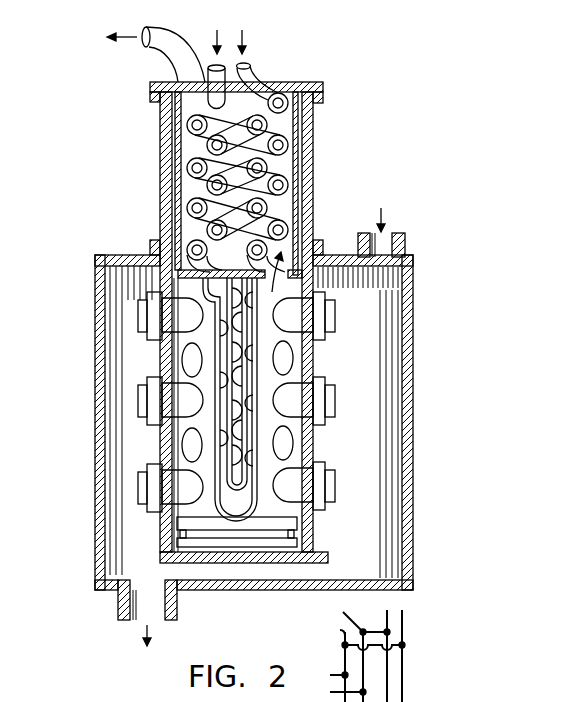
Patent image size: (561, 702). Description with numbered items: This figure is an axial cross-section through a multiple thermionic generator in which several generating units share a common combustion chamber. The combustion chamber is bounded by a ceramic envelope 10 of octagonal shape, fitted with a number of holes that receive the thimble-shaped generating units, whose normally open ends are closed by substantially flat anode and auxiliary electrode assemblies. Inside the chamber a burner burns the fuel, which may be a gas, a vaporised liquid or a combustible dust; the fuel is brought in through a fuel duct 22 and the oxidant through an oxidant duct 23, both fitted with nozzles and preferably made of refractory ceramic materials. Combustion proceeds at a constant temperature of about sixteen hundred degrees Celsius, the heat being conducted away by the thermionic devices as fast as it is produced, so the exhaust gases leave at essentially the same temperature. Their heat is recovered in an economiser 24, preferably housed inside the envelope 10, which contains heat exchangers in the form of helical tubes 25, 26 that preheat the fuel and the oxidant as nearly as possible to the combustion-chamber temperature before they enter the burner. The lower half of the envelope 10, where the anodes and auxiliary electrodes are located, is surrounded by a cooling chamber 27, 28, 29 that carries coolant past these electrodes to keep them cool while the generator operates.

The ceramic envelope 10 is at (314, 362).
The fuel duct 22 is at (208, 498).
The oxidant duct 23 is at (176, 457).
The economiser 24 is at (313, 143).
The helical tube 25 is at (280, 98).
The helical tube 26 is at (260, 122).
The cooling chamber 27 is at (413, 462).
The cooling chamber inlet 28 is at (397, 240).
The cooling chamber outlet 29 is at (118, 595).